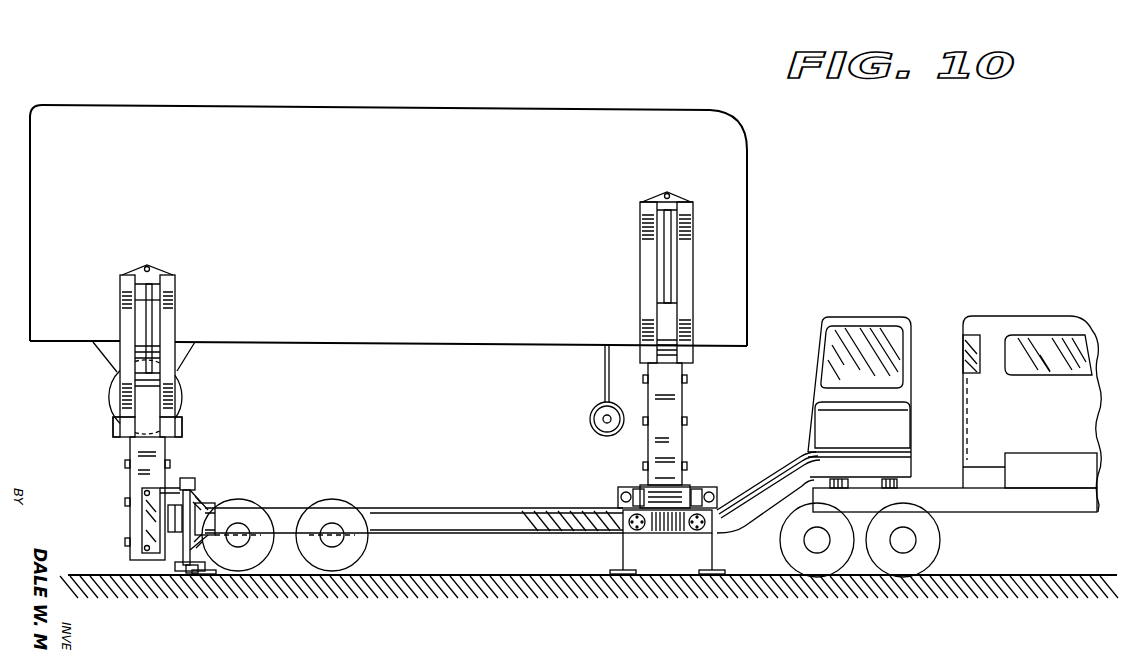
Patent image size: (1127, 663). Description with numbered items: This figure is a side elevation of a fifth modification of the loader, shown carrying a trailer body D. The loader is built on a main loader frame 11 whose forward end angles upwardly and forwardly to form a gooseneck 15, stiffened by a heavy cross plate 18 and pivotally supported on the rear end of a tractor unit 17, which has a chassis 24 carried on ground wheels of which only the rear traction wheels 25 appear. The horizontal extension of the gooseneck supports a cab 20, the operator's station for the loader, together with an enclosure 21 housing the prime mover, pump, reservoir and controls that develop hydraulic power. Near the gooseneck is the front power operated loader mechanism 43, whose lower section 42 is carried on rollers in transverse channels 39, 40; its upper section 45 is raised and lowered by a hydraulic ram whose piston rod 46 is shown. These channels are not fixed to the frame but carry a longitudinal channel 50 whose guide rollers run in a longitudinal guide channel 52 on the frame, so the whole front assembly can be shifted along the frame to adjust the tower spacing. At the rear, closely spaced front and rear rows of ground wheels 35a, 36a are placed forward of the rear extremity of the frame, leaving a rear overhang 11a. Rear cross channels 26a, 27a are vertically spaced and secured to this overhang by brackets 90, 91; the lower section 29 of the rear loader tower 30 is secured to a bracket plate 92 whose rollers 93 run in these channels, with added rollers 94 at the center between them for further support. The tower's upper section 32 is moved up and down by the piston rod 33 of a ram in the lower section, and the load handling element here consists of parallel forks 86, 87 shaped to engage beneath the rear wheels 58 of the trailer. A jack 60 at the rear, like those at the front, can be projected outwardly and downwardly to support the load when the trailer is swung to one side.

The trailer body D is at (528, 108).
The loader tower 30 is at (178, 331).
The piston rod 33 is at (153, 295).
The upper section 32 is at (172, 312).
The rear ground wheels 58 is at (110, 393).
The fork 86 is at (182, 425).
The fork 87 is at (113, 432).
The lower section 29 is at (158, 450).
The bracket plate 92 is at (150, 530).
The bracket 90 is at (148, 495).
The rollers 94 is at (168, 517).
The rear cross channel 26a is at (196, 482).
The rollers 93 is at (190, 478).
The rear cross channel 27a is at (176, 571).
The bracket 91 is at (194, 572).
The rear overhang 11a is at (208, 506).
The main loader frame 11 is at (428, 506).
The ground wheels 36a is at (245, 500).
The ground wheels 35a is at (345, 500).
The longitudinal guide channel 52 is at (566, 528).
The longitudinal channel 50 is at (664, 528).
The jack 60 is at (710, 562).
The channel 40 is at (630, 488).
The channel 39 is at (708, 488).
The lower section 42 is at (675, 404).
The upper section 45 is at (640, 272).
The front loader tower 43 is at (646, 300).
The piston rod 46 is at (672, 252).
The gooseneck 15 is at (764, 506).
The cross plate 18 is at (788, 462).
The cab 20 is at (888, 316).
The enclosure 21 is at (876, 442).
The chassis 24 is at (986, 508).
The rear traction wheels 25 is at (895, 578).
The tractor unit 17 is at (1008, 314).